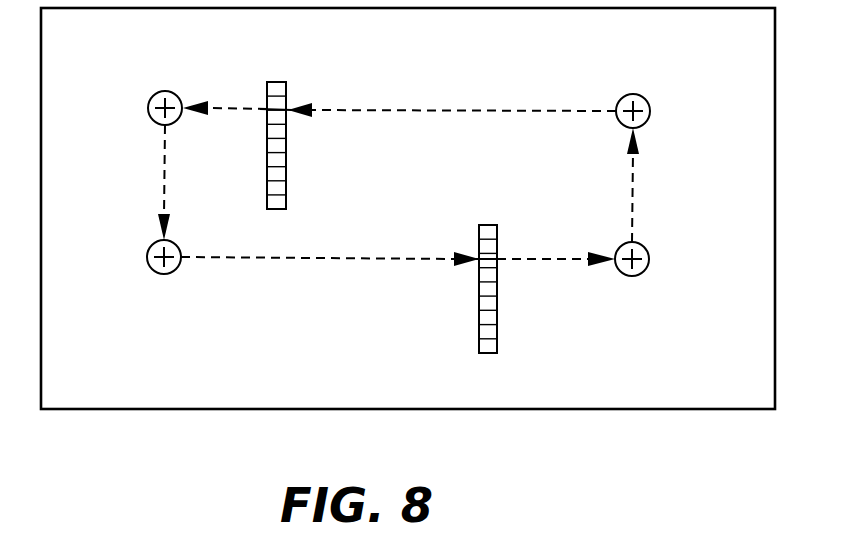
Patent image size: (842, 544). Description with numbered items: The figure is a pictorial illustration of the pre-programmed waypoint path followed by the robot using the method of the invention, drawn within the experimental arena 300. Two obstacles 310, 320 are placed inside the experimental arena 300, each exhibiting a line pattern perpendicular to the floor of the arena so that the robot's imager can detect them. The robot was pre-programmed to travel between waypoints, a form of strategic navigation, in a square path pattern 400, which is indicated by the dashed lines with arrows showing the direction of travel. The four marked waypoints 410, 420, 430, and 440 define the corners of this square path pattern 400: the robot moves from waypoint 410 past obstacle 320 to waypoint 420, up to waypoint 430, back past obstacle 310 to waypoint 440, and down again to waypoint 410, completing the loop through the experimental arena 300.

The experimental arena 300 is at (763, 67).
The obstacle 310 is at (287, 145).
The obstacle 320 is at (498, 318).
The square path pattern 400 is at (460, 110).
The waypoint 410 is at (147, 257).
The waypoint 420 is at (649, 259).
The waypoint 430 is at (650, 111).
The waypoint 440 is at (148, 108).